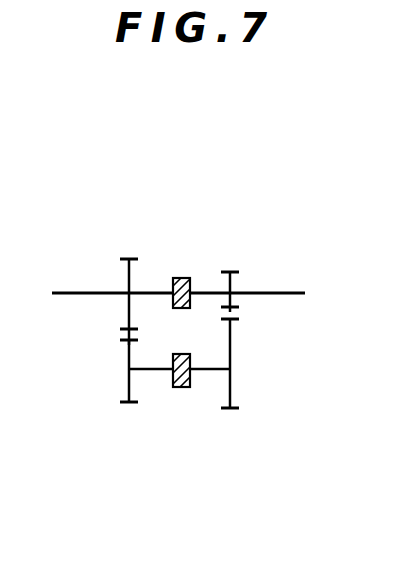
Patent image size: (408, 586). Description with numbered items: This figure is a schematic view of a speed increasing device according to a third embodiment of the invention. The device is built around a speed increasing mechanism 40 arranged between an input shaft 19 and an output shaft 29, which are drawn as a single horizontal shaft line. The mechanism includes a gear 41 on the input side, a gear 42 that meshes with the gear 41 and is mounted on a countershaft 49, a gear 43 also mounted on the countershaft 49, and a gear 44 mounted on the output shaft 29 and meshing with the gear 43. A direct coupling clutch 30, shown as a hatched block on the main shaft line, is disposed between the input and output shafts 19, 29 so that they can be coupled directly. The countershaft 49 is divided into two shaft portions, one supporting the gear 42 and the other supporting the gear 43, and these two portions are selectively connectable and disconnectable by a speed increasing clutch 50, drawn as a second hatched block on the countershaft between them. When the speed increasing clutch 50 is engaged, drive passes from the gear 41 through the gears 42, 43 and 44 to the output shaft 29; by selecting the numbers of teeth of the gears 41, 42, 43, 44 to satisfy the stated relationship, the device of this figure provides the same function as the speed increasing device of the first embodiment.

The input shaft 19 is at (65, 293).
The output shaft 29 is at (290, 293).
The direct coupling clutch 30 is at (181, 266).
The speed increasing mechanism 40 is at (181, 457).
The gear N1 41 is at (128, 258).
The gear N2 42 is at (127, 407).
The gear N3 43 is at (230, 412).
The gear N4 44 is at (229, 270).
The countershaft 49 is at (215, 370).
The speed increasing clutch 50 is at (175, 400).